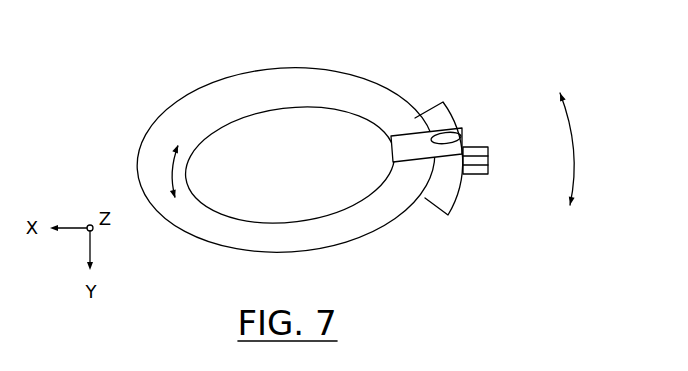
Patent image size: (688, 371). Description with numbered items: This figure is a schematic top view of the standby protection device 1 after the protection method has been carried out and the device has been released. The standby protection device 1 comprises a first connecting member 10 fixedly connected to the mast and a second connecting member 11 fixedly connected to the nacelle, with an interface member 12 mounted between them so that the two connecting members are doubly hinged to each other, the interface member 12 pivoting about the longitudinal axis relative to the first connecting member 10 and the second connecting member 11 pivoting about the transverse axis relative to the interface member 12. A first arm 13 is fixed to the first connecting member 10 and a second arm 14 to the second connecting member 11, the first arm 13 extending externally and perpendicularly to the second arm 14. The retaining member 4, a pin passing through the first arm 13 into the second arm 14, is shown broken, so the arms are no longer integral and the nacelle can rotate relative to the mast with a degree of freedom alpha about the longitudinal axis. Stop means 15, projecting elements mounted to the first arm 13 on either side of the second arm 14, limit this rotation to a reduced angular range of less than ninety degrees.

The standby protection device 1 is at (372, 62).
The first connecting member 10 is at (150, 123).
The second connecting member 11 is at (290, 165).
The interface member 12 is at (262, 175).
The retaining member 4 is at (467, 134).
The first arm 13 is at (473, 175).
The second arm 14 is at (393, 163).
The stop means 15 is at (455, 110).